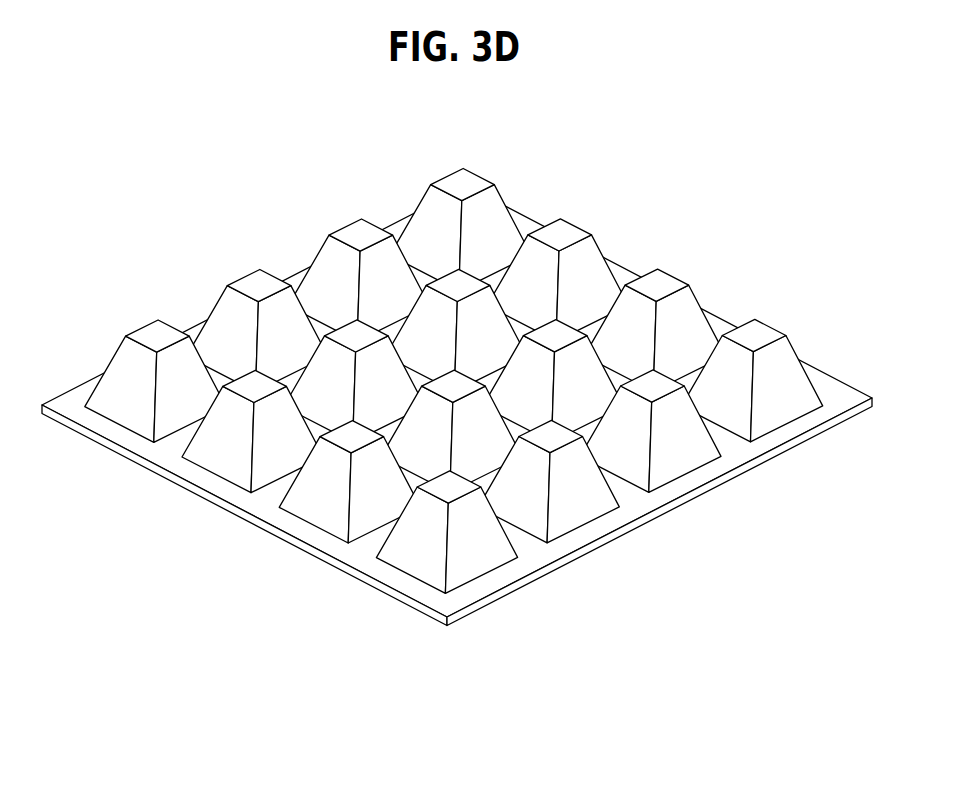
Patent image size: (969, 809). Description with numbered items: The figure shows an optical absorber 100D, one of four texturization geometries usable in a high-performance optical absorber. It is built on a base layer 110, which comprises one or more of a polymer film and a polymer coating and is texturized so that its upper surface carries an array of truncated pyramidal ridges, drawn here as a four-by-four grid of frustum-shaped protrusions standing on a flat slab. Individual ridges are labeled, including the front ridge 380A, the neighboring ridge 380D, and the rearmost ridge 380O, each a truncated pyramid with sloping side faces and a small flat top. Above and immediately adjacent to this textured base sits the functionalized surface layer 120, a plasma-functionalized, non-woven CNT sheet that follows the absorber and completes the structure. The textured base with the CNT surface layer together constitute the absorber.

The optical absorber 100D is at (463, 454).
The base layer 110 is at (707, 492).
The functionalized surface layer 120 is at (484, 381).
The truncated pyramidal ridge 380A is at (462, 565).
The truncated pyramidal ridge 380D is at (323, 512).
The truncated pyramidal ridge 380O is at (493, 220).